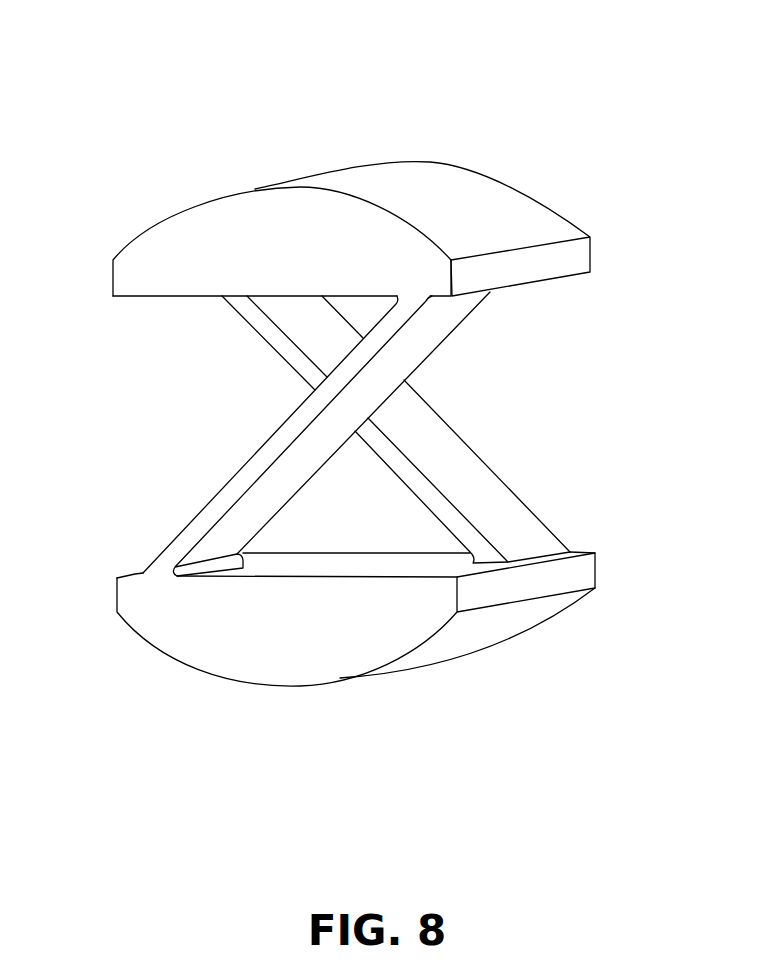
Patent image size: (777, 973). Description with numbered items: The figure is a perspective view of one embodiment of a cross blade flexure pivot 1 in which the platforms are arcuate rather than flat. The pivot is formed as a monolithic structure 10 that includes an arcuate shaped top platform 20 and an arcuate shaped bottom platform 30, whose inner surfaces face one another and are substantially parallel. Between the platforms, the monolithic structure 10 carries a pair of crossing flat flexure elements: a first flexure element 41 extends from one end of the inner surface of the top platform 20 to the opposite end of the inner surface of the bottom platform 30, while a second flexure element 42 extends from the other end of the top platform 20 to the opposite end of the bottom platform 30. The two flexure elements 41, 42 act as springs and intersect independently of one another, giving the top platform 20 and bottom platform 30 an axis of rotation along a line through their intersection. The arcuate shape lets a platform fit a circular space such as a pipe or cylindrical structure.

The cross blade flexure pivot 1 is at (313, 50).
The monolithic structure 10 is at (128, 378).
The top platform 20 is at (413, 193).
The bottom platform 30 is at (280, 650).
The first flexure element 41 is at (270, 443).
The second flexure element 42 is at (473, 470).